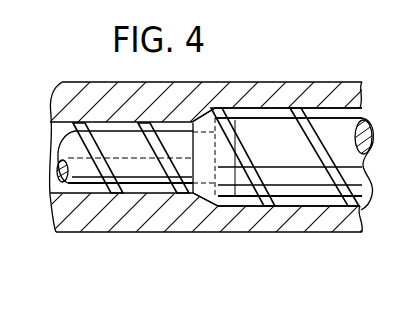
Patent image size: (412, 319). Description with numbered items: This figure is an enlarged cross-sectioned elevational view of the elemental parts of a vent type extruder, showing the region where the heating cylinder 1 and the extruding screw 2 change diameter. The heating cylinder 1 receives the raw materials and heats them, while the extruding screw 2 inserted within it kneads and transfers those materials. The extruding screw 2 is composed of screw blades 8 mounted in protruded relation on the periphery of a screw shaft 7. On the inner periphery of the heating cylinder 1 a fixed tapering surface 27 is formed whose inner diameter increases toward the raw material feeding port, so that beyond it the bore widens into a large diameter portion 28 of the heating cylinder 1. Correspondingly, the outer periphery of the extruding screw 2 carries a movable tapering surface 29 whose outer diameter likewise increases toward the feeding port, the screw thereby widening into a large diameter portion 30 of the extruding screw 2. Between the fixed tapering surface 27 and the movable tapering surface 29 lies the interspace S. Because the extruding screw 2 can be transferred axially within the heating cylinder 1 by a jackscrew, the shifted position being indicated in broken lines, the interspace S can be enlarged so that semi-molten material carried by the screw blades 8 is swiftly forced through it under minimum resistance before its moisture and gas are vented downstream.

The heating cylinder 1 is at (312, 90).
The extruding screw 2 is at (342, 127).
The screw shaft 7 is at (140, 187).
The screw blades 8 is at (168, 190).
The fixed tapering surface 27 is at (228, 108).
The large diameter portion of the heating cylinder 28 is at (312, 212).
The movable tapering surface 29 is at (207, 192).
The large diameter portion of the extruding screw 30 is at (257, 208).
The interspace S is at (217, 108).